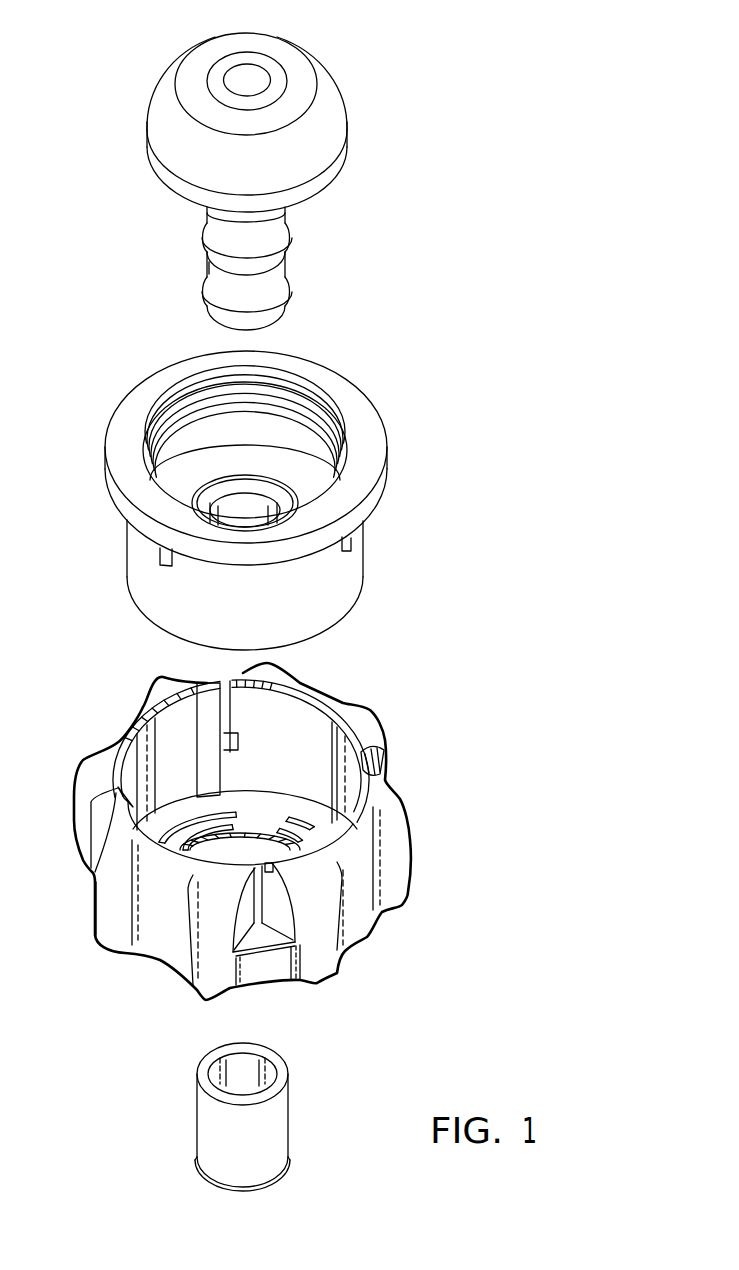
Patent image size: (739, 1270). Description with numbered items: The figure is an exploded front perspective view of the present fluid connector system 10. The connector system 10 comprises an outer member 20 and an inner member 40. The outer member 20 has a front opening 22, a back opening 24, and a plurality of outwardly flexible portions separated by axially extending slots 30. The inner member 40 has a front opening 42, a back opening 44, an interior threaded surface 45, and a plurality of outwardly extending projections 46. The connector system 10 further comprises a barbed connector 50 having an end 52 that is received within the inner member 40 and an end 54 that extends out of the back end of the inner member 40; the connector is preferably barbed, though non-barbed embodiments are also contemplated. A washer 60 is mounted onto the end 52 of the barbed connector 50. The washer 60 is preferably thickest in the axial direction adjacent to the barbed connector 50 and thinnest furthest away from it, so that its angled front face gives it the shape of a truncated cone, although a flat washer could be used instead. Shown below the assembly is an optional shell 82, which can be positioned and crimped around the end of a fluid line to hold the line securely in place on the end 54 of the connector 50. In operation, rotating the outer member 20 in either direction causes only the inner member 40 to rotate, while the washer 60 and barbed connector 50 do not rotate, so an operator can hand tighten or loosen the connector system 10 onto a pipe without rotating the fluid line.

The connector system 10 is at (366, 676).
The outer member 20 is at (409, 834).
The front opening 22 is at (109, 707).
The back opening 24 is at (360, 979).
The axially extending slot 30 is at (232, 931).
The inner member 40 is at (130, 548).
The front opening 42 is at (337, 367).
The back opening 44 is at (134, 623).
The interior threaded surface 45 is at (156, 398).
The outwardly extending projection 46 is at (353, 538).
The barbed connector 50 is at (292, 238).
The end of barbed connector 52 is at (225, 63).
The end of barbed connector 54 is at (217, 278).
The washer 60 is at (347, 127).
The shell 82 is at (280, 1137).